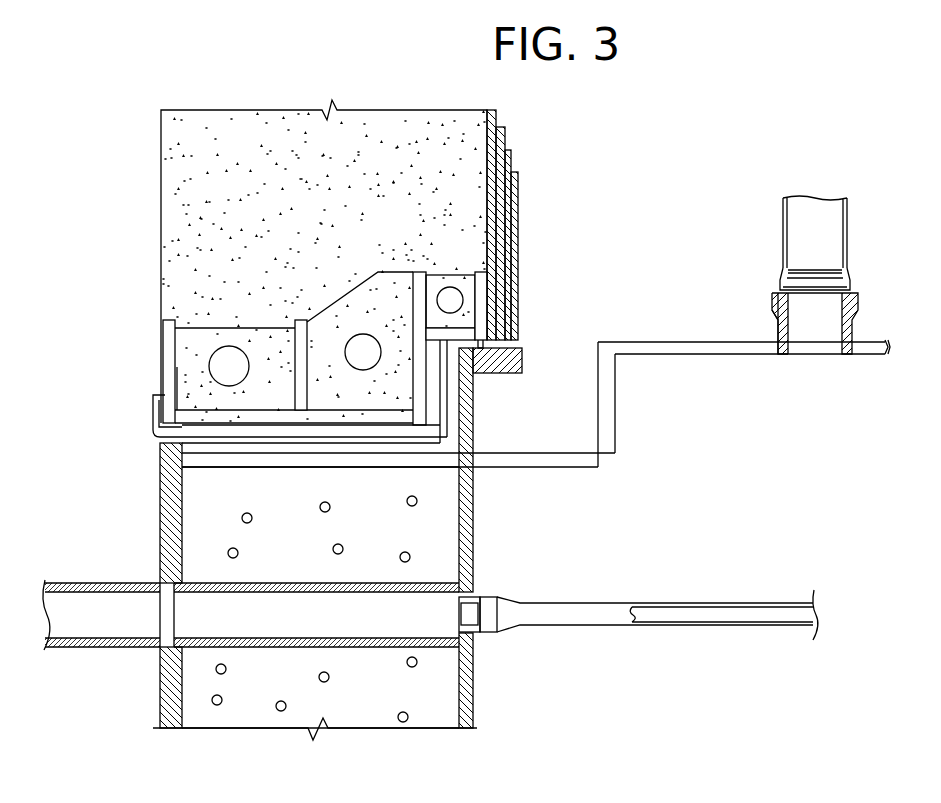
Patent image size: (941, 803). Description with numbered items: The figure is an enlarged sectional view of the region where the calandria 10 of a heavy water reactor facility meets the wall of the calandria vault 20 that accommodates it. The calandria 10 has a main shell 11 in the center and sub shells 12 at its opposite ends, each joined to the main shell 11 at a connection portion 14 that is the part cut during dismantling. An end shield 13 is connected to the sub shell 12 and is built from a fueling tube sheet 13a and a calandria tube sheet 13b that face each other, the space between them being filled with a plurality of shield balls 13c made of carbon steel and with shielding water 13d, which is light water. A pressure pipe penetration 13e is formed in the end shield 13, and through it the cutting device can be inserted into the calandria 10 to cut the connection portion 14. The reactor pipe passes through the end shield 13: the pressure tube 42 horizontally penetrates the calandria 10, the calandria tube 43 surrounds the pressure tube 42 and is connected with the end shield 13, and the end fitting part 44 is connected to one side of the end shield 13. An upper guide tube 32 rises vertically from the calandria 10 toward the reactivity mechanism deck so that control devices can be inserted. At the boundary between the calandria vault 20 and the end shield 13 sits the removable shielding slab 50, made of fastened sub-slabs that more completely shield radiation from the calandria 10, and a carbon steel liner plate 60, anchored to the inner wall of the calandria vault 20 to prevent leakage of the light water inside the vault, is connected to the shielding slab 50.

The calandria 10 is at (536, 424).
The main shell 11 is at (723, 347).
The sub shell 12 is at (567, 462).
The end shield 13 is at (420, 544).
The fueling tube sheet 13a is at (170, 473).
The calandria tube sheet 13b is at (463, 684).
The shield ball 13c is at (242, 517).
The shielding water 13d is at (210, 550).
The pressure pipe penetration 13e is at (251, 638).
The connection portion 14 is at (605, 405).
The calandria vault 20 is at (185, 188).
The upper guide tube 32 is at (846, 223).
The pressure tube 42 is at (733, 625).
The calandria tube 43 is at (602, 630).
The end fitting part 44 is at (90, 648).
The shielding slab 50 is at (512, 203).
The liner plate 60 is at (492, 125).